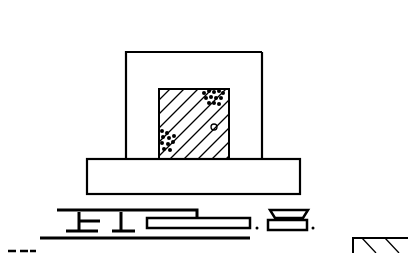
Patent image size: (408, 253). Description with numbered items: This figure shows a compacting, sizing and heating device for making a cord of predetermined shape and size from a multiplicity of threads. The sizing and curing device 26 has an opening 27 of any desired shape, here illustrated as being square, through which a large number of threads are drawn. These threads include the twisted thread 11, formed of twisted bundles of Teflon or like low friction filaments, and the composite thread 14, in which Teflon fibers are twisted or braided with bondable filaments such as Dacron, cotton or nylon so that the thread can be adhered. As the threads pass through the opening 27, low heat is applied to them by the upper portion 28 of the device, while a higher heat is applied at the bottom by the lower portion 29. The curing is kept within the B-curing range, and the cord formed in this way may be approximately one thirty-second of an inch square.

The twisted thread 11 is at (202, 92).
The composite thread 14 is at (215, 90).
The sizing and curing device 26 is at (263, 73).
The opening 27 is at (217, 127).
The upper portion 28 is at (263, 94).
The lower portion 29 is at (300, 167).